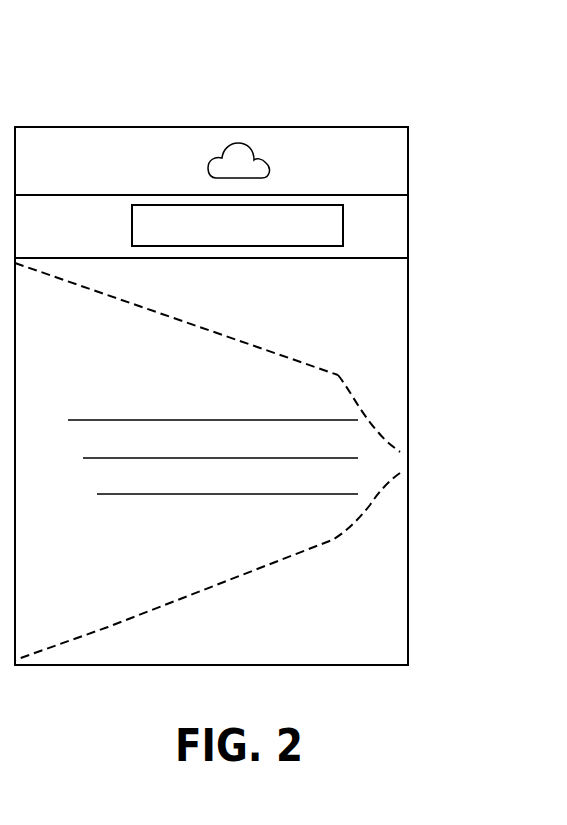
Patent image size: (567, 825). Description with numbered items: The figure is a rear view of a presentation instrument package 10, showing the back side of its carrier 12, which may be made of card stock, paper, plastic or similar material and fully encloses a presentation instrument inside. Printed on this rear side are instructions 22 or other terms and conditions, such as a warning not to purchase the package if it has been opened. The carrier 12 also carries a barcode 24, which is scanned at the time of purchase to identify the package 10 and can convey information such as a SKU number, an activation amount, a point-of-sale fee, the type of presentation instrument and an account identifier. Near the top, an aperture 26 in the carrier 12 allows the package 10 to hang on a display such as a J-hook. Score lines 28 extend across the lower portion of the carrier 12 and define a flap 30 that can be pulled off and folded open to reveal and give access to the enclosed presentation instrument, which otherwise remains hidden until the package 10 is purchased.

The presentation instrument package 10 is at (306, 93).
The carrier 12 is at (408, 172).
The instructions 22 is at (107, 135).
The barcode 24 is at (343, 222).
The aperture 26 is at (232, 160).
The score lines 28 is at (338, 375).
The flap 30 is at (323, 515).